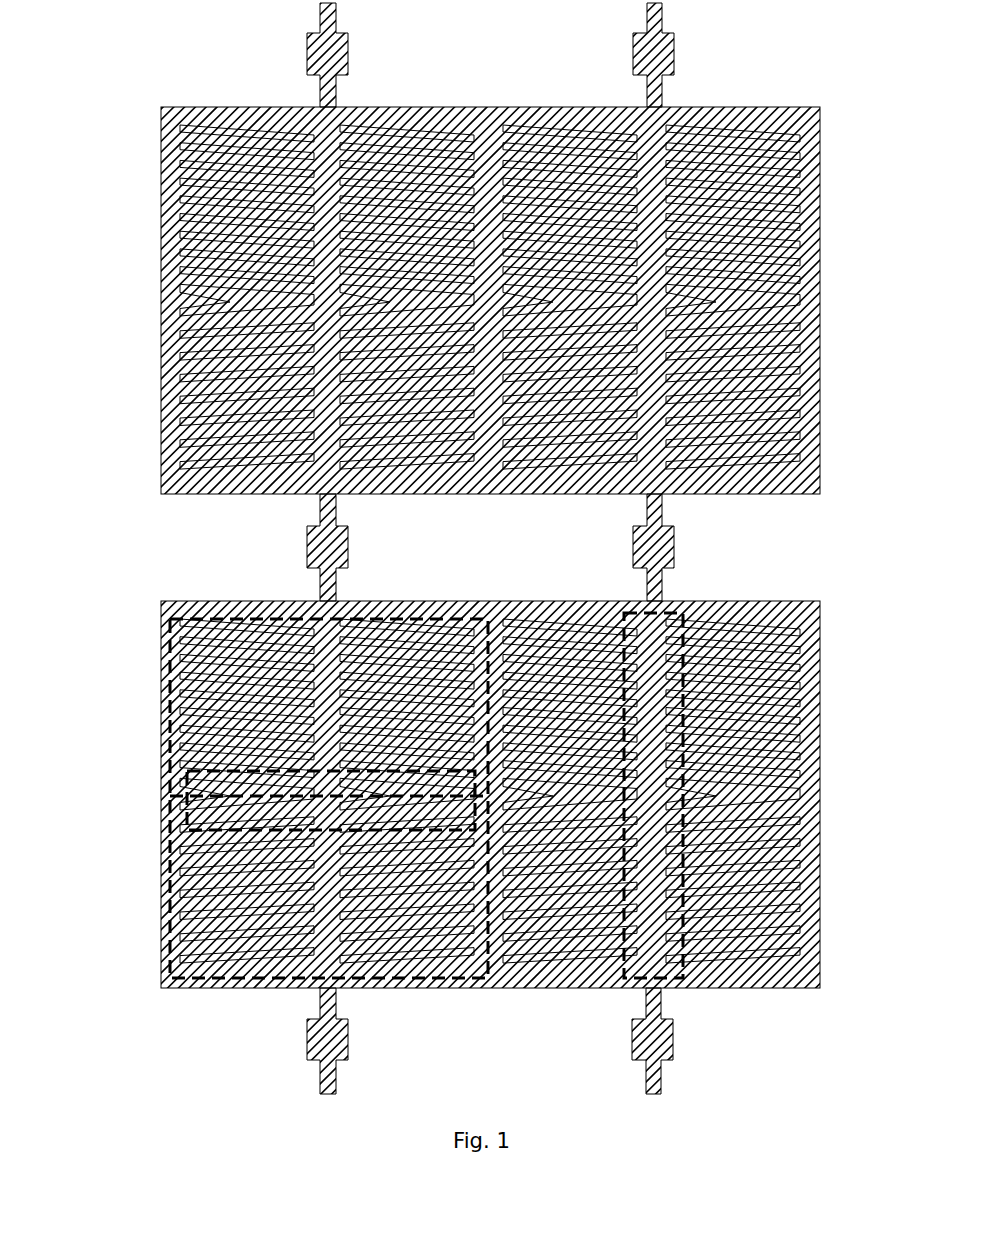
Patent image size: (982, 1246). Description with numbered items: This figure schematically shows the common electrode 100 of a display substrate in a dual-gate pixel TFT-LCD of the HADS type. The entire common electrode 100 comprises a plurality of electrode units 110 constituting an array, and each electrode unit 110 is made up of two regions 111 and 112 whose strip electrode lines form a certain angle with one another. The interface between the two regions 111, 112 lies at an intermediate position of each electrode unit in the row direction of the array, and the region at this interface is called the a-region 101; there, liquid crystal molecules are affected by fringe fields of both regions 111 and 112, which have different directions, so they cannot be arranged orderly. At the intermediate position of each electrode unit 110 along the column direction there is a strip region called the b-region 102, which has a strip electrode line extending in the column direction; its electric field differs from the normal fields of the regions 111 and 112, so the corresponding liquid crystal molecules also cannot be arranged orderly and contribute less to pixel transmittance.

The common electrode 100 is at (403, 107).
The a-region 101 is at (170, 744).
The b-region 102 is at (685, 620).
The electrode unit 110 is at (160, 657).
The first region 111 is at (192, 615).
The second region 112 is at (170, 877).